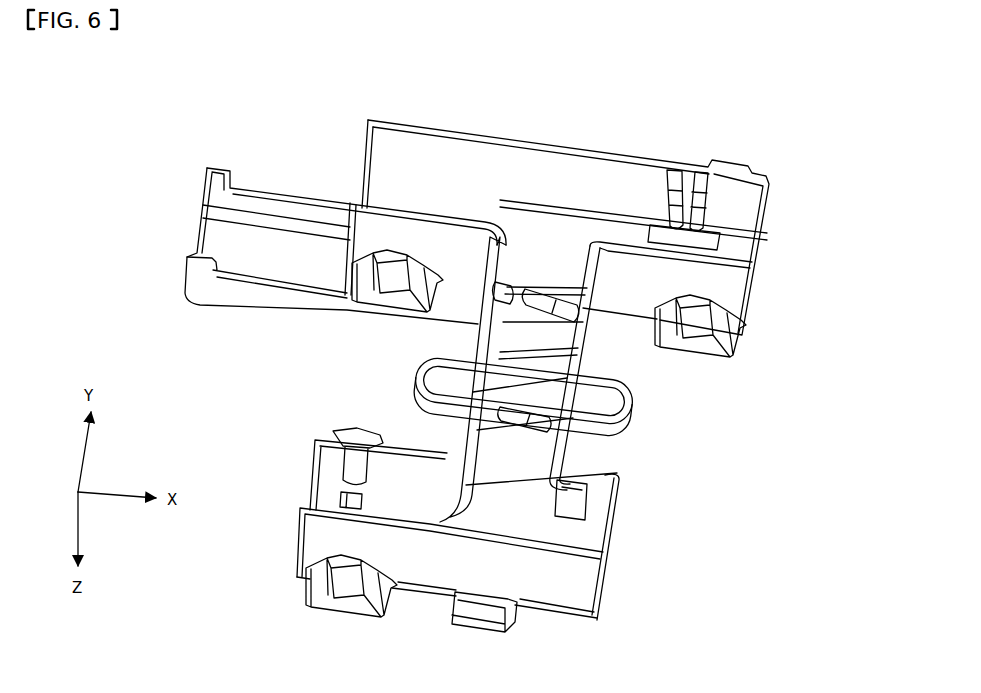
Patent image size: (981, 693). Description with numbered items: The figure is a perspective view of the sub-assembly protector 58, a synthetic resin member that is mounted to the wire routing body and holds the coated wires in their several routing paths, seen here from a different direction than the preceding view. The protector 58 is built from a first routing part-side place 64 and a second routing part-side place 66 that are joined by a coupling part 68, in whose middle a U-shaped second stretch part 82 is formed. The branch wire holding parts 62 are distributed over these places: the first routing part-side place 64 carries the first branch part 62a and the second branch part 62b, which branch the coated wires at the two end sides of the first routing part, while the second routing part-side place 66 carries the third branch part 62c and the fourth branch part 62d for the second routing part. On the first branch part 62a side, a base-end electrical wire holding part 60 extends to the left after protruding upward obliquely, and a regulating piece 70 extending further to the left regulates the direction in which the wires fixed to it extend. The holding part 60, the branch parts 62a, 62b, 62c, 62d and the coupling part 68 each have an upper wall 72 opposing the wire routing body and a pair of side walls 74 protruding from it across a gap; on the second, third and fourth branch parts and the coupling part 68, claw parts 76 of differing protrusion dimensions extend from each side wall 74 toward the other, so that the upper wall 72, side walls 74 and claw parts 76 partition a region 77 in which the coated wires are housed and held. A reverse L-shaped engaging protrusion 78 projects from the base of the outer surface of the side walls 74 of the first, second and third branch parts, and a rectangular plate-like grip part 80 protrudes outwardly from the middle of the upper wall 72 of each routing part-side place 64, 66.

The sub-assembly protector 58 is at (585, 120).
The base-end electrical wire holding part 60 is at (178, 228).
The branch parts 62 is at (878, 352).
The first branch part 62a is at (414, 109).
The second branch part 62b is at (774, 290).
The third branch part 62c is at (418, 621).
The fourth branch part 62d is at (624, 478).
The first routing part-side place 64 is at (780, 262).
The second routing part-side place 66 is at (641, 551).
The coupling part 68 is at (587, 352).
The regulating piece 70 is at (385, 340).
The upper wall 72 is at (575, 243).
The side wall 74 is at (487, 168).
The claw part 76 is at (687, 186).
The region 77 is at (796, 240).
The engaging protrusion 78 is at (392, 272).
The grip part 80 is at (487, 600).
The second stretch part 82 is at (633, 413).